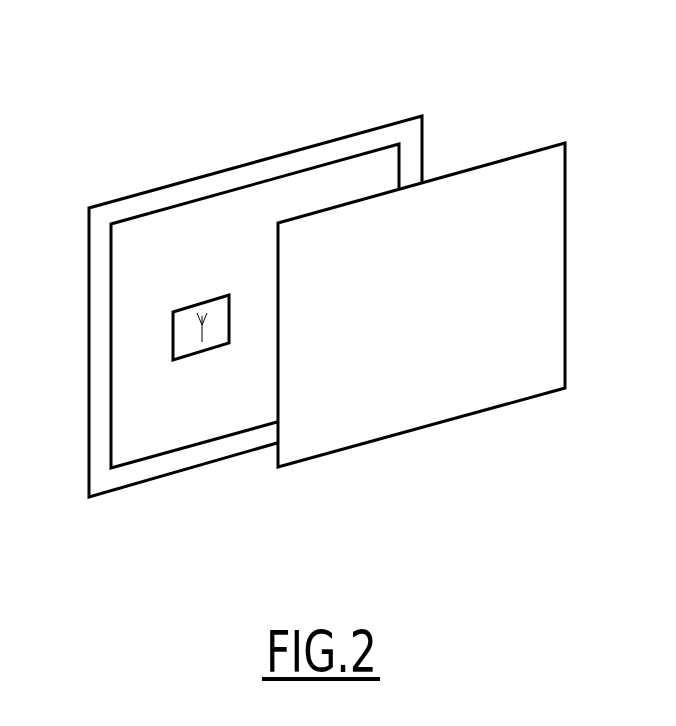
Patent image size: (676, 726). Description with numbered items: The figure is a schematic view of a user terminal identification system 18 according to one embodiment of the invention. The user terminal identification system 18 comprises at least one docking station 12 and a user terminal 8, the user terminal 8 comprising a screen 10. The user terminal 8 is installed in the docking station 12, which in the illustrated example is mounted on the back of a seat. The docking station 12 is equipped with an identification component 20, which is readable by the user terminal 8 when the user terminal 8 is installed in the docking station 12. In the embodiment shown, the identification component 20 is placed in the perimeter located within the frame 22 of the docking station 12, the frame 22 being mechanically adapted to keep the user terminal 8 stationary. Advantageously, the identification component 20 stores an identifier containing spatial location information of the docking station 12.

The user terminal 8 is at (496, 125).
The screen 10 is at (513, 240).
The docking station 12 is at (103, 282).
The user terminal identification system 18 is at (455, 100).
The identification component 20 is at (171, 355).
The frame 22 is at (293, 163).